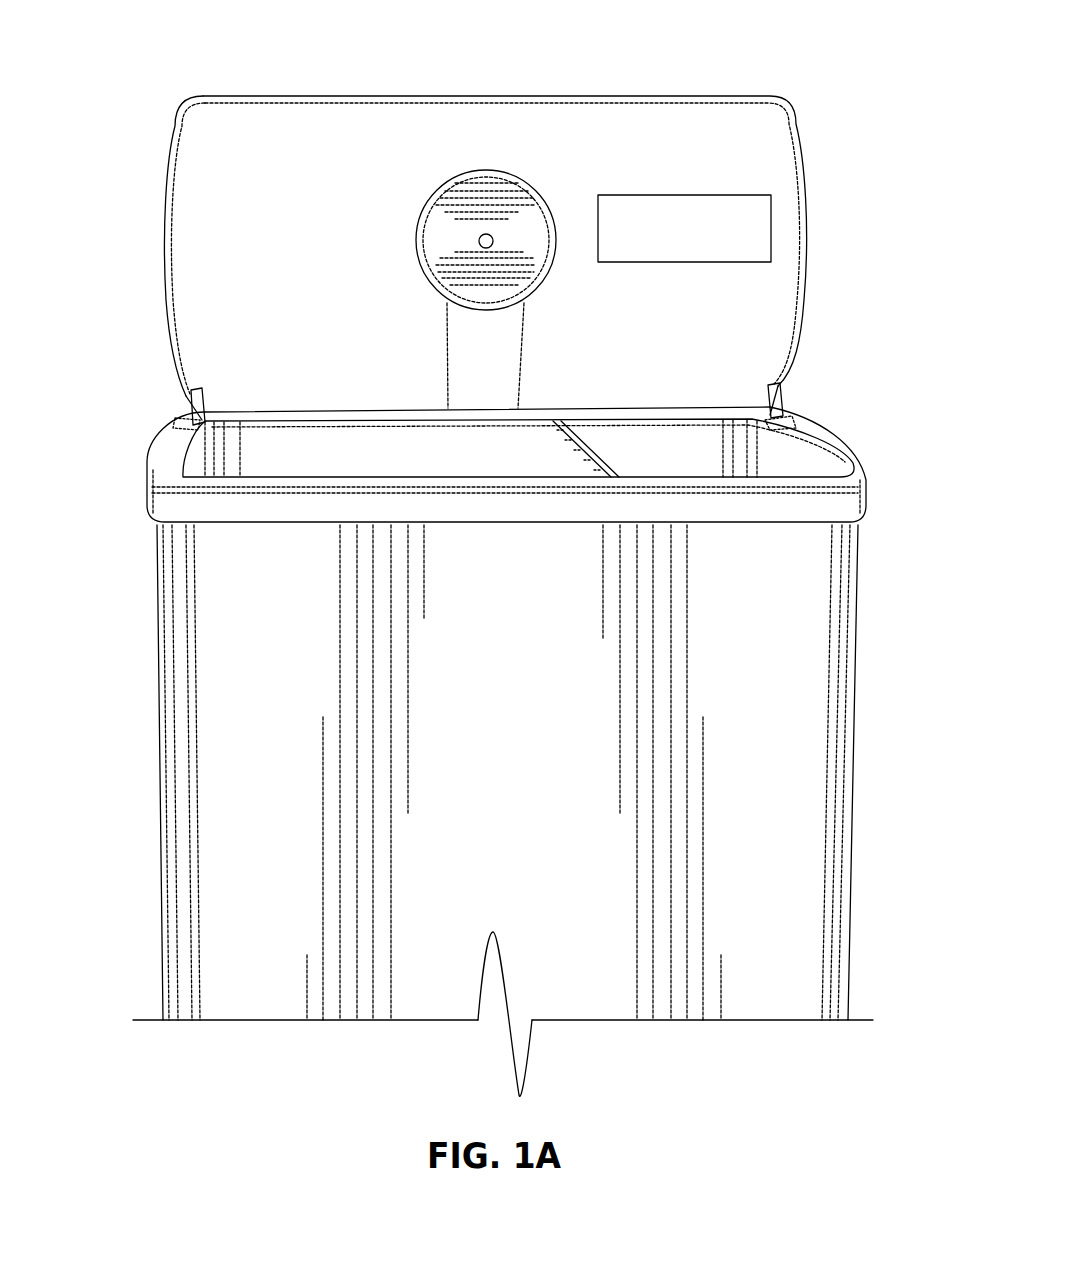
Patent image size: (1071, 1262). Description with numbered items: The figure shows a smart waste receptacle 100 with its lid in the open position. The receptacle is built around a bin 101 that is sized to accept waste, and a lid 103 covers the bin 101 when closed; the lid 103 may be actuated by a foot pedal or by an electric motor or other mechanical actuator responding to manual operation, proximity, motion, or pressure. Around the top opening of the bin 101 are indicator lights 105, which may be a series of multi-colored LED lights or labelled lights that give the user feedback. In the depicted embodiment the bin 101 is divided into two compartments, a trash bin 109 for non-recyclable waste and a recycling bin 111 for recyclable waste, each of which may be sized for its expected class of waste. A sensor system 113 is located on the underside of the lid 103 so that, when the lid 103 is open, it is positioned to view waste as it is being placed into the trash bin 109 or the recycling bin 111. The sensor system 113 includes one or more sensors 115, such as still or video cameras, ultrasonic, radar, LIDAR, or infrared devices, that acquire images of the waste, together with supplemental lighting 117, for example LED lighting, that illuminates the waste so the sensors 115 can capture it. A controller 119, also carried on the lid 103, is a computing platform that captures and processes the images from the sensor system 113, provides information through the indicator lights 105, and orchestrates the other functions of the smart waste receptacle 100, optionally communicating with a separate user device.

The smart waste receptacle 100 is at (947, 37).
The bin 101 is at (188, 712).
The lid 103 is at (190, 196).
The indicator lights 105 is at (164, 513).
The trash bin 109 is at (152, 440).
The recycling bin 111 is at (812, 447).
The sensor system 113 is at (487, 212).
The sensors 115 is at (430, 176).
The supplemental lighting 117 is at (468, 233).
The controller 119 is at (667, 194).